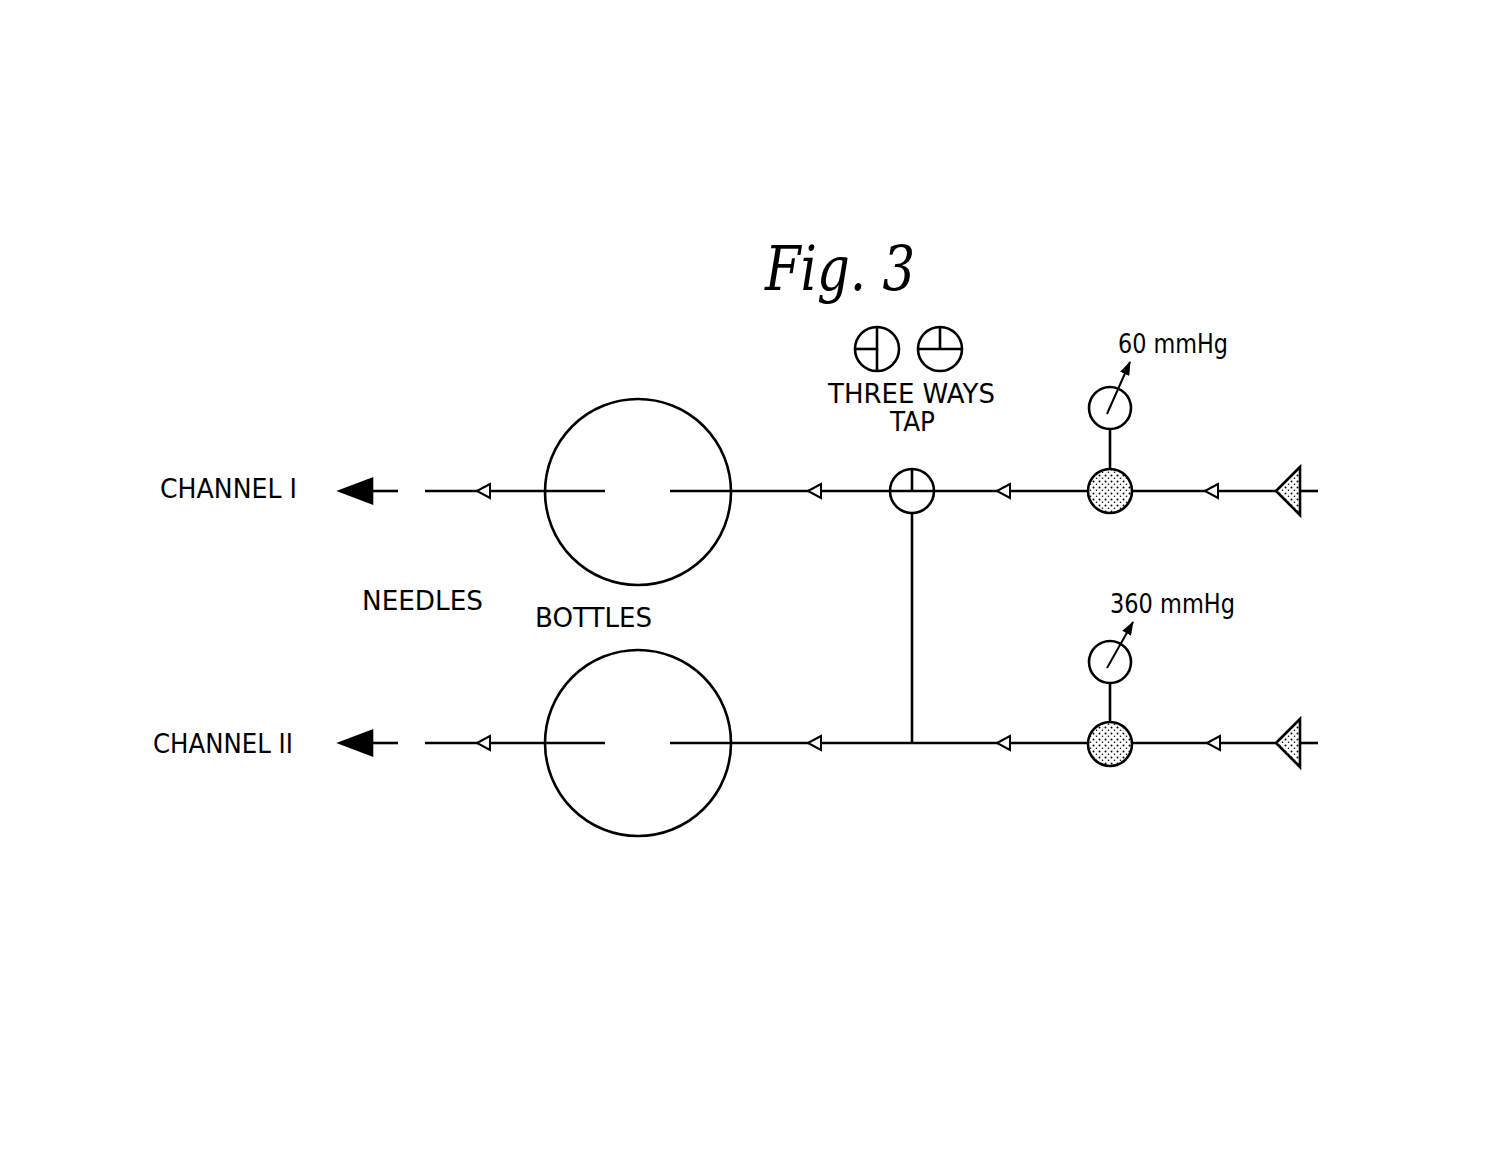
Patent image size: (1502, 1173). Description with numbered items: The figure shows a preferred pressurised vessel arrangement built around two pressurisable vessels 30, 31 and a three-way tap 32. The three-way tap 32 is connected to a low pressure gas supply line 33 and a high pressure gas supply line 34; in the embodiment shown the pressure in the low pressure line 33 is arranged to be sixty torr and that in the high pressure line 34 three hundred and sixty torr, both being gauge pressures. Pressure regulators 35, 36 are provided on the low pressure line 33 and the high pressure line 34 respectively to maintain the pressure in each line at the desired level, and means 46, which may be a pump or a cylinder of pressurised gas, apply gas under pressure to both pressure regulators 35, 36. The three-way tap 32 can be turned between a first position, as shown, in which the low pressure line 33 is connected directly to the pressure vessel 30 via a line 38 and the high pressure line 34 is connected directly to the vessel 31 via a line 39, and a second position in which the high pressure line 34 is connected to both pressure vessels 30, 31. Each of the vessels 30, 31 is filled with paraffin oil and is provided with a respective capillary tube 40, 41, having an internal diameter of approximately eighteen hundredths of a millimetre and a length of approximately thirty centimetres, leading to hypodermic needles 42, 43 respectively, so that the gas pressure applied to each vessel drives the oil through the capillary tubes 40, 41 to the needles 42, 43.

The pressurisable vessel 30 is at (655, 505).
The pressurisable vessel 31 is at (655, 757).
The three-way tap 32 is at (928, 503).
The low pressure gas supply line 33 is at (1040, 490).
The high pressure gas supply line 34 is at (955, 746).
The pressure regulator 35 is at (1137, 465).
The pressure regulator 36 is at (1094, 771).
The line 38 is at (775, 492).
The line 39 is at (775, 746).
The capillary tube 40 is at (513, 492).
The capillary tube 41 is at (512, 746).
The hypodermic needle 42 is at (446, 492).
The hypodermic needle 43 is at (436, 746).
The means for applying gas under pressure 46 is at (1315, 512).